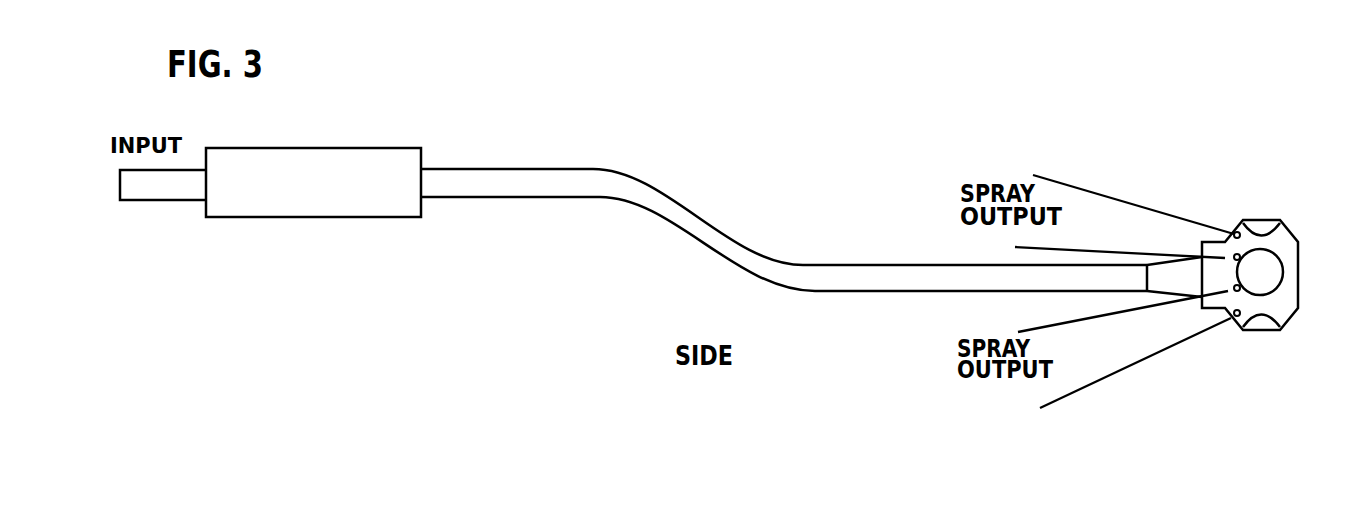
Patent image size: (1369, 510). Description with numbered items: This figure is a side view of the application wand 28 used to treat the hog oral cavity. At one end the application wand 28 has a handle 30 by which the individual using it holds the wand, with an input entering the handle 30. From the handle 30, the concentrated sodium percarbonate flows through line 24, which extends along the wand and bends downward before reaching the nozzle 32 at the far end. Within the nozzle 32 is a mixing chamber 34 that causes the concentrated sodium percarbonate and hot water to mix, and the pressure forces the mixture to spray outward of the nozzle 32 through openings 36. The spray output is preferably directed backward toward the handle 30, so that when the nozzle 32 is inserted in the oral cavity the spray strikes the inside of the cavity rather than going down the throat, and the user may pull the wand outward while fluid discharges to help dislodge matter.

The line 24 is at (811, 233).
The application wand 28 is at (704, 215).
The handle 30 is at (313, 157).
The nozzle 32 is at (1297, 272).
The mixing chamber 34 is at (1282, 277).
The openings 36 is at (1215, 247).